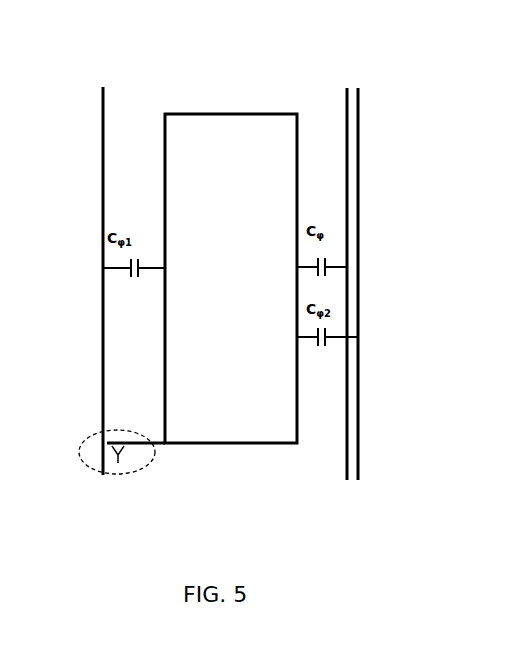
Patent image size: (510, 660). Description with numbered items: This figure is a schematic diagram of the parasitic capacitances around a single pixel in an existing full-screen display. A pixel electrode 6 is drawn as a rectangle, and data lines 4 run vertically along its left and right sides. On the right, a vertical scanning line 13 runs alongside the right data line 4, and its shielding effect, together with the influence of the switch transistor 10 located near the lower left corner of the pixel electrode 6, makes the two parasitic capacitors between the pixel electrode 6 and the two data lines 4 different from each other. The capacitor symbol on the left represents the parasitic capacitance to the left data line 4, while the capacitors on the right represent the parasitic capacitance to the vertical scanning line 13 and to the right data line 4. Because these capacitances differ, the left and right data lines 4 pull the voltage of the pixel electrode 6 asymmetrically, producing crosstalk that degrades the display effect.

The data line 4 is at (102, 110).
The pixel electrode 6 is at (197, 133).
The vertical scanning line 13 is at (346, 107).
The switch transistor 10 is at (92, 470).